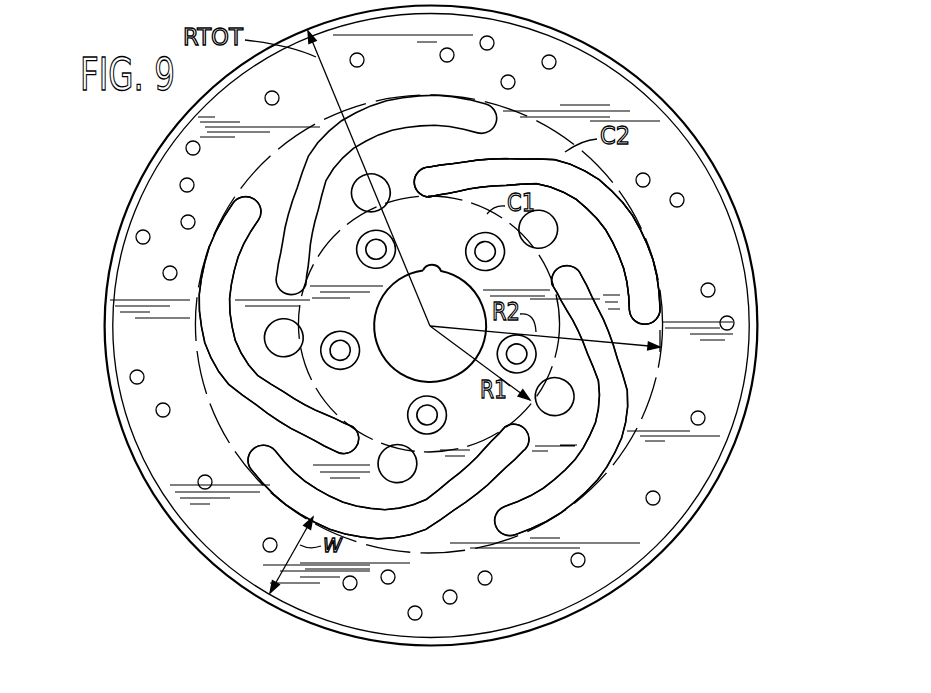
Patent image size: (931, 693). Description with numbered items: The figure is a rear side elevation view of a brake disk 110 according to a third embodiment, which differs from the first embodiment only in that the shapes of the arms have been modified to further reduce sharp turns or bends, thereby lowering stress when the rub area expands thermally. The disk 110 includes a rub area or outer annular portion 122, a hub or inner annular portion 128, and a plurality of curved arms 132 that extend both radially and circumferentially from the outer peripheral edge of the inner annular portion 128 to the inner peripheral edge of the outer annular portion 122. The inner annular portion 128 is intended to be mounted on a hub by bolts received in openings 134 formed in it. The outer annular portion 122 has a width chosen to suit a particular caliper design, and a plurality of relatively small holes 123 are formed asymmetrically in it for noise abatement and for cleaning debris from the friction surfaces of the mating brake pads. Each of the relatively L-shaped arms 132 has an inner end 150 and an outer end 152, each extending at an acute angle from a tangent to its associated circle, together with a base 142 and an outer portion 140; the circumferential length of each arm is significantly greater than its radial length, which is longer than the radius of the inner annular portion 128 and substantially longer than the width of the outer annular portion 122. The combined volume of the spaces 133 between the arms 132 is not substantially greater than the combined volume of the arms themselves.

The disk 110 is at (664, 103).
The outer annular portion 122 is at (552, 600).
The holes 123 is at (557, 61).
The inner annular portion 128 is at (360, 324).
The curved arms 132 is at (459, 141).
The spaces 133 is at (434, 131).
The openings 134 is at (472, 245).
The outer portion 140 is at (283, 484).
The base 142 is at (453, 167).
The inner end 150 is at (312, 384).
The outer end 152 is at (572, 103).